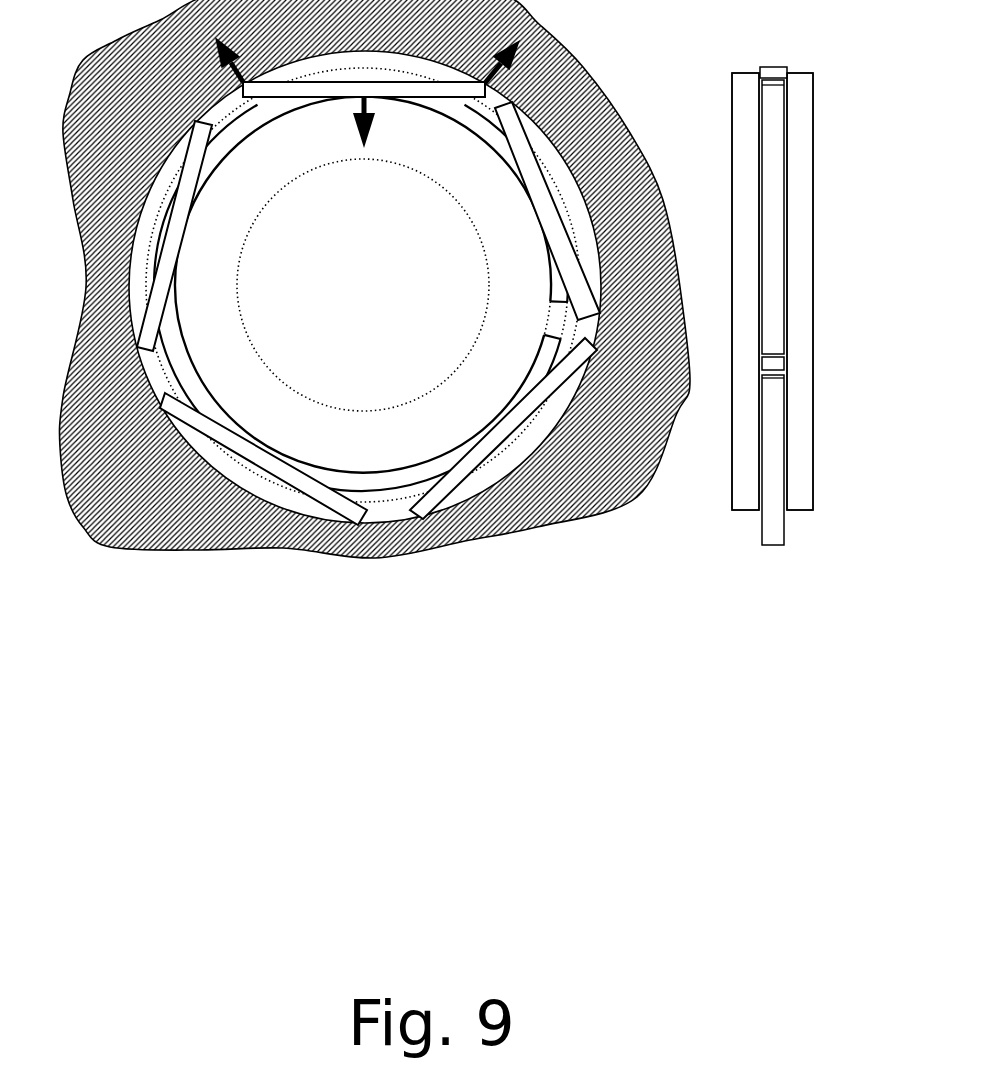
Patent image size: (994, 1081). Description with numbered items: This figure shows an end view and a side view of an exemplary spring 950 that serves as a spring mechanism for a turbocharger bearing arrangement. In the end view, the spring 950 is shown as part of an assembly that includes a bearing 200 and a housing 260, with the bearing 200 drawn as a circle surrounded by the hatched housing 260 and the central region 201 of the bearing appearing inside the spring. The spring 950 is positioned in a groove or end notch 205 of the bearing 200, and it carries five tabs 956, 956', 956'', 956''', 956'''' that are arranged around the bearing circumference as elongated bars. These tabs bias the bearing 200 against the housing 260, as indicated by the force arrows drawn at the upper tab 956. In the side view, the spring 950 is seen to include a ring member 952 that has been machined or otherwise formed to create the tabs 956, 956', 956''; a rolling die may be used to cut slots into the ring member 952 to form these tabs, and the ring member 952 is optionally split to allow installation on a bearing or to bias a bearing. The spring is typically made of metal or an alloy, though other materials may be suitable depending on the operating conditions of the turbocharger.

The bearing 200 is at (375, 453).
The wafer central region 201 is at (391, 297).
The end notch 205 is at (547, 321).
The housing 260 is at (622, 485).
The spring 950 is at (750, 42).
The ring member 952 is at (473, 128).
The tab 956 is at (554, 86).
The tab 956' is at (639, 225).
The tab 956'' is at (642, 441).
The tab 956''' is at (270, 434).
The tab 956'''' is at (237, 236).